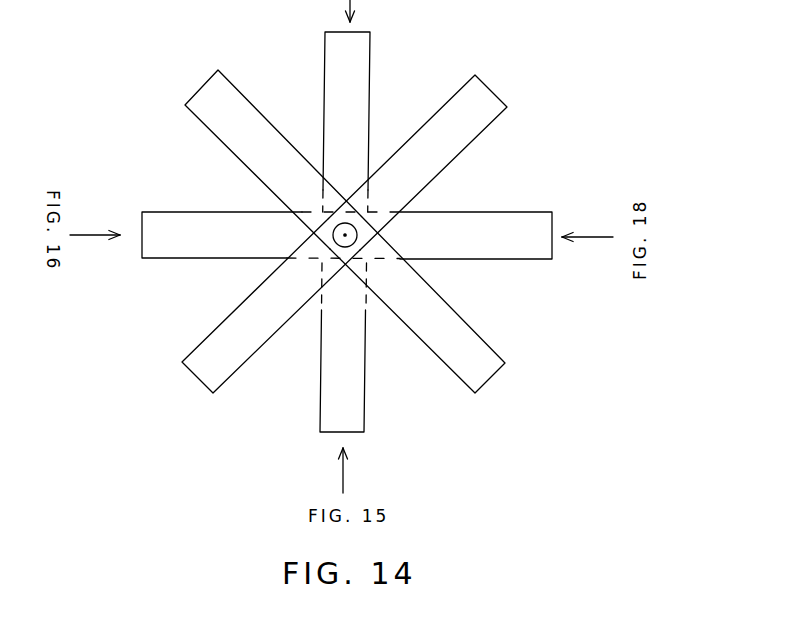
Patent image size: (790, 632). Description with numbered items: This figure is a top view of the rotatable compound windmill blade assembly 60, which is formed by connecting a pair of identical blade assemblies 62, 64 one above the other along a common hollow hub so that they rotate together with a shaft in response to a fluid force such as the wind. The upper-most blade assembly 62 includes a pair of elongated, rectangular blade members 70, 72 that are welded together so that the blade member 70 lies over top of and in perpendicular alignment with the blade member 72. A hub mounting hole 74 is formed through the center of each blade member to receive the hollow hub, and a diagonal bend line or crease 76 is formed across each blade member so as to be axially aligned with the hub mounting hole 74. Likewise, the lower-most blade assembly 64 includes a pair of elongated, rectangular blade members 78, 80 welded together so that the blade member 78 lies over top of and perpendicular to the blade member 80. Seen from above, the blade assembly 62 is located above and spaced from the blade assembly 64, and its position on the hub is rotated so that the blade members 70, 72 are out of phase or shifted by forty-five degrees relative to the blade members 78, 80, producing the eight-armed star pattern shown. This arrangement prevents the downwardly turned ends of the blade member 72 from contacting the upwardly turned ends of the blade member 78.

The rotatable compound windmill blade assembly 60 is at (495, 187).
The blade assembly 62 is at (237, 85).
The blade assembly 64 is at (525, 208).
The blade member 70 is at (457, 133).
The blade member 72 is at (243, 133).
The hub mounting hole 74 is at (345, 240).
The diagonal bend line or crease 76 is at (359, 233).
The blade member 78 is at (182, 242).
The blade member 80 is at (340, 73).